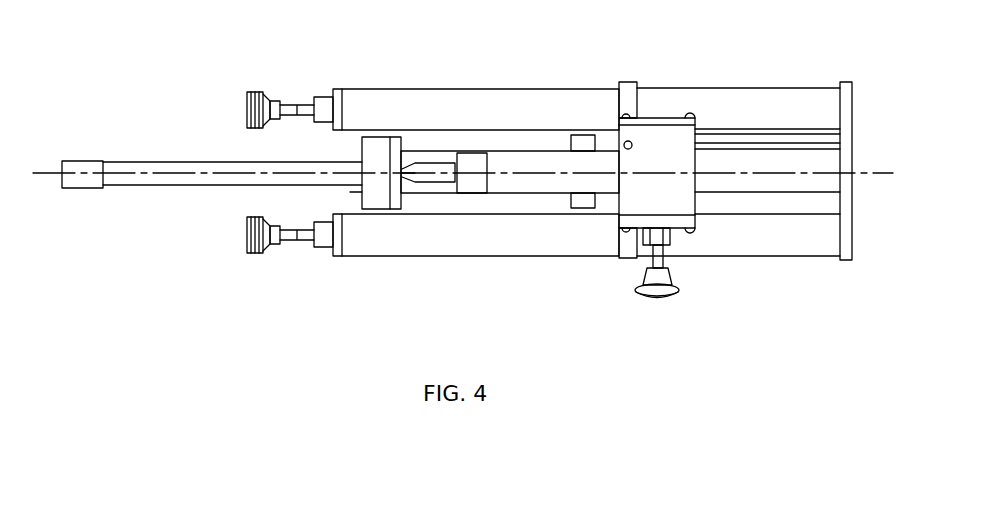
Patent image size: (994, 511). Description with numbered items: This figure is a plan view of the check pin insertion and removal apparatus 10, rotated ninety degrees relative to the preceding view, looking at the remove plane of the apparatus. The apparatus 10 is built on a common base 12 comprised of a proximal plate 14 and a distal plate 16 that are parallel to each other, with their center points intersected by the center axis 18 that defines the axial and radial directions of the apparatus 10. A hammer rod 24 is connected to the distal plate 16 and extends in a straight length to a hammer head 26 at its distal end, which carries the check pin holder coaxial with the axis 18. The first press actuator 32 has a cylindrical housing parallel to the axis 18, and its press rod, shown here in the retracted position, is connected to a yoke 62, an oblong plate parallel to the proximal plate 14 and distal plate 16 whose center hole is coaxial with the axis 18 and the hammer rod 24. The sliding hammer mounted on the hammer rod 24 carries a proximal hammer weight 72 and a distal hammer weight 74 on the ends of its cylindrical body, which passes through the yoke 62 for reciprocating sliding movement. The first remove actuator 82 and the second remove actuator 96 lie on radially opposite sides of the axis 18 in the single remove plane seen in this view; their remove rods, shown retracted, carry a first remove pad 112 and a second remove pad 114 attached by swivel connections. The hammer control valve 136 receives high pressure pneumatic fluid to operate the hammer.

The check pin insertion and removal apparatus 10 is at (515, 48).
The base 12 is at (788, 83).
The proximal plate 14 is at (847, 140).
The distal plate 16 is at (628, 247).
The axis 18 is at (48, 173).
The hammer rod 24 is at (163, 163).
The hammer head 26 is at (88, 161).
The first press actuator 32 is at (557, 182).
The yoke 62 is at (395, 210).
The proximal hammer weight 72 is at (590, 204).
The distal hammer weight 74 is at (358, 193).
The first remove actuator 82 is at (470, 237).
The second remove actuator 96 is at (417, 110).
The first remove pad 112 is at (250, 254).
The second remove pad 114 is at (252, 92).
The hammer control valve 136 is at (685, 197).